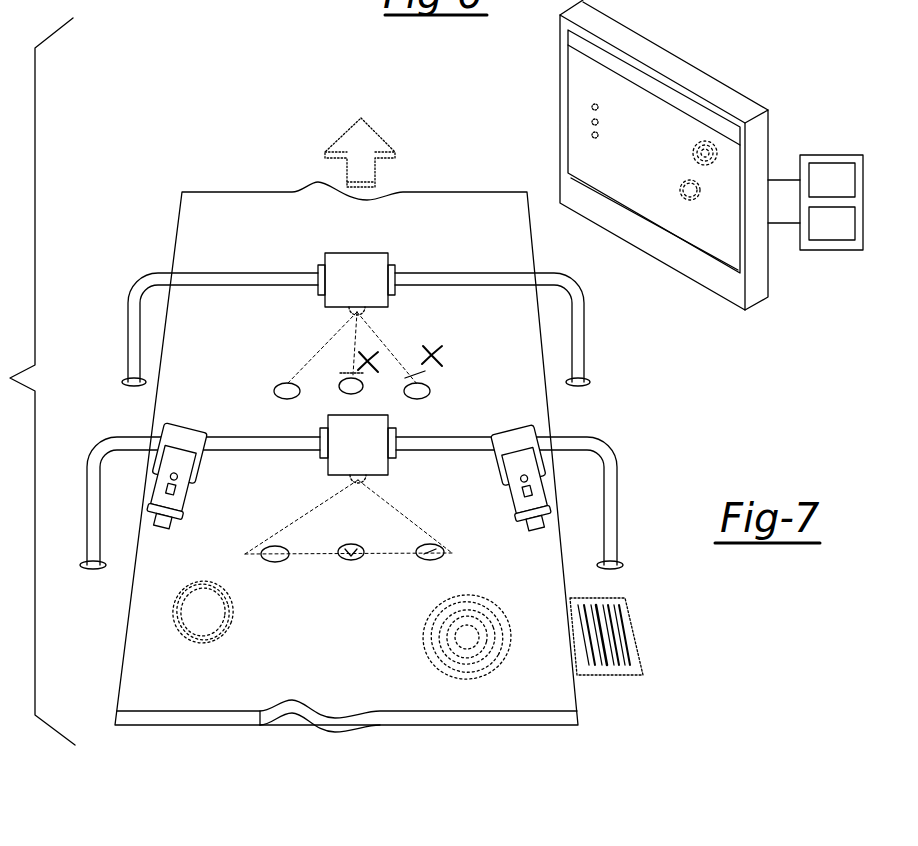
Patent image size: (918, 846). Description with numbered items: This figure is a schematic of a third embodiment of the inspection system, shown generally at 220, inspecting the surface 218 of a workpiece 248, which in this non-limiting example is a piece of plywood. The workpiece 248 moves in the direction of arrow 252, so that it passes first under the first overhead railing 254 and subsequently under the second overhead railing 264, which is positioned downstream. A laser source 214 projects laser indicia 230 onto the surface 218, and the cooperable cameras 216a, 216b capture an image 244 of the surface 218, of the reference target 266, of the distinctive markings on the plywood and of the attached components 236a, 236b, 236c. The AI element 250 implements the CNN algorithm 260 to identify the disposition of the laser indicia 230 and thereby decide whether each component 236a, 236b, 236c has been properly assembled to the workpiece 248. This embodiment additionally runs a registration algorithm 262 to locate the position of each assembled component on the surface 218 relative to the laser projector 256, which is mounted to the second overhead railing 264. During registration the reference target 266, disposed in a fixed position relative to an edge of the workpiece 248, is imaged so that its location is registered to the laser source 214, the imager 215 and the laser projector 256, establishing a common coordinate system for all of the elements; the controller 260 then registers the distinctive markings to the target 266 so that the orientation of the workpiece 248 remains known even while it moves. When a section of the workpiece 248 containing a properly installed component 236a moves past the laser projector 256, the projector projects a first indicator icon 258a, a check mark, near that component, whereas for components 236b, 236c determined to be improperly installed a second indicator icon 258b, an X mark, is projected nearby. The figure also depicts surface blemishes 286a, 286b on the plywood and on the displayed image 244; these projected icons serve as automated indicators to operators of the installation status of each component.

The inspection system alternative embodiment 220 is at (170, 198).
The workpiece 248 is at (250, 728).
The imager 215 is at (160, 560).
The arrow indicating direction of movement 252 is at (360, 142).
The second overhead railing 264 is at (586, 341).
The first overhead railing 254 is at (617, 511).
The laser projector 256 is at (372, 292).
The laser source 214 is at (374, 456).
The laser indicia 230 is at (306, 550).
The component 236a is at (350, 395).
The component 236b is at (275, 392).
The component 236c is at (425, 396).
The first indicator icon 258a is at (282, 362).
The second indicator icon 258b is at (363, 364).
The camera 216a is at (188, 432).
The camera 216b is at (510, 432).
The first contaminant 286a is at (184, 630).
The second contaminant 286b is at (476, 656).
The reference target 266 is at (636, 639).
The image 244 is at (643, 100).
The surface 218 is at (658, 167).
The AI element 250 is at (836, 252).
The CNN algorithm 260 is at (832, 180).
The registration algorithm 262 is at (832, 223).